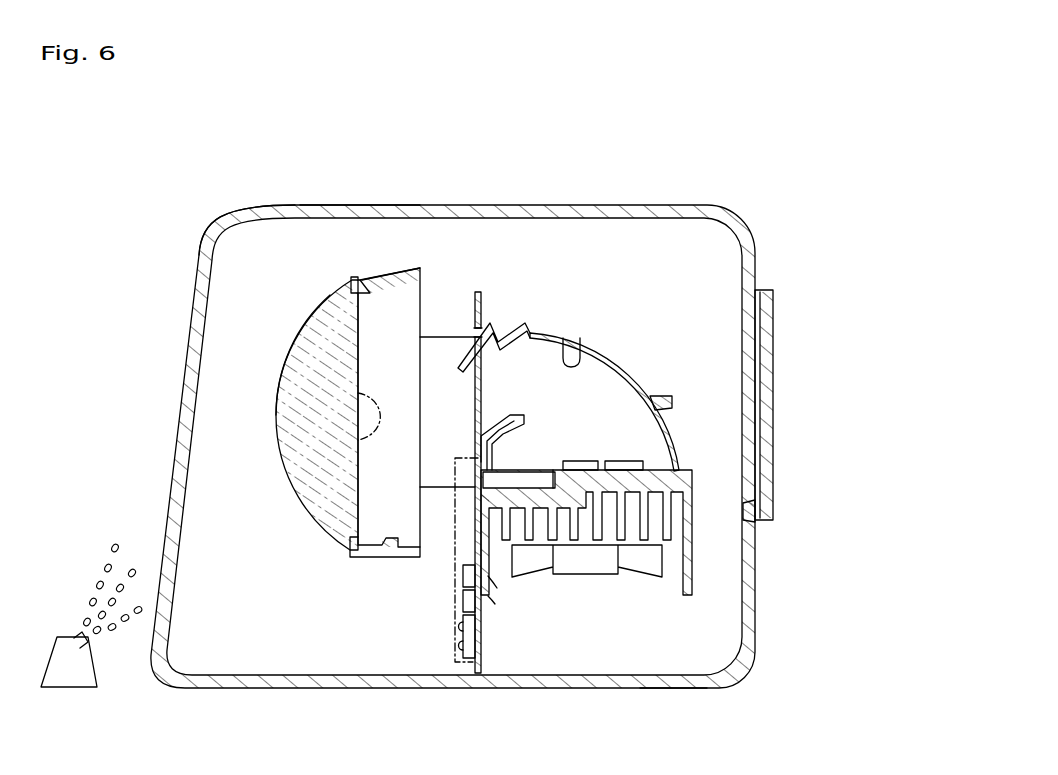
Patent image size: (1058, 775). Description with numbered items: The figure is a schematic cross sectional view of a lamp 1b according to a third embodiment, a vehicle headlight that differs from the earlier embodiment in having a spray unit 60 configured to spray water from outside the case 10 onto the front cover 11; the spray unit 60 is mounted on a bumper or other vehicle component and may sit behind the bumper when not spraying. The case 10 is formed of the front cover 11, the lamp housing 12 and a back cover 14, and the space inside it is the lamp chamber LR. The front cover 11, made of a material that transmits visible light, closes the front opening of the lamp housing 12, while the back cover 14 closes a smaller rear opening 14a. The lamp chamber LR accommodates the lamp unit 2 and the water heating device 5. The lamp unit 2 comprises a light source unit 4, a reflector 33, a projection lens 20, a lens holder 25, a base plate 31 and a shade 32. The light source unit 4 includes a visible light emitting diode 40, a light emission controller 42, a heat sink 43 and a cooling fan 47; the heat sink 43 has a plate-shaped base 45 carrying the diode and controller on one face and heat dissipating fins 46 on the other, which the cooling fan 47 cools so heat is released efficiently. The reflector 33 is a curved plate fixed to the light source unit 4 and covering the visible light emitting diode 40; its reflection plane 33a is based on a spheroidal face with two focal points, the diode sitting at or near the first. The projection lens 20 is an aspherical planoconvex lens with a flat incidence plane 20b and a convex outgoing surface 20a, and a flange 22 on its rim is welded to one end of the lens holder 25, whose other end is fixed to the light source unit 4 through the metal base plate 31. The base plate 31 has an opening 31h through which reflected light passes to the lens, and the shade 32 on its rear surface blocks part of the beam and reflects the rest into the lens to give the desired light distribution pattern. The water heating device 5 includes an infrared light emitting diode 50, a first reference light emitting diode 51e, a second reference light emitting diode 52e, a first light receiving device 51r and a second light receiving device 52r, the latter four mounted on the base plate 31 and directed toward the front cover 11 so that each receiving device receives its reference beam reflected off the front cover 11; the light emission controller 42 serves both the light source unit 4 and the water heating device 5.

The lamp 1b is at (722, 150).
The case 10 is at (522, 203).
The front cover 11 is at (270, 213).
The lamp housing 12 is at (352, 216).
The lamp unit 2 is at (536, 288).
The lamp chamber LR is at (714, 248).
The projection lens 20 is at (241, 415).
The outgoing surface 20a is at (282, 372).
The incidence plane 20b is at (378, 402).
The flange 22 is at (352, 280).
The lens holder 25 is at (406, 267).
The base plate 31 is at (481, 442).
The opening 31h is at (474, 333).
The reflector 33 is at (568, 308).
The reflection plane 33a is at (572, 336).
The shade 32 is at (553, 488).
The light emission controller 42 is at (556, 470).
The infrared light emitting diode 50 is at (592, 462).
The visible light emitting diode 40 is at (637, 463).
The heat sink 43 is at (672, 505).
The base 45 is at (690, 483).
The heat dissipating fins 46 is at (690, 520).
The light source unit 4 is at (710, 527).
The back cover 14 is at (792, 403).
The opening 14a is at (761, 368).
The cooling fan 47 is at (692, 680).
The water heating device 5 is at (448, 617).
The first light receiving device 51r is at (461, 623).
The second light receiving device 52r is at (466, 657).
The first reference light emitting diode 51e is at (488, 576).
The second reference light emitting diode 52e is at (490, 596).
The spray unit 60 is at (72, 636).